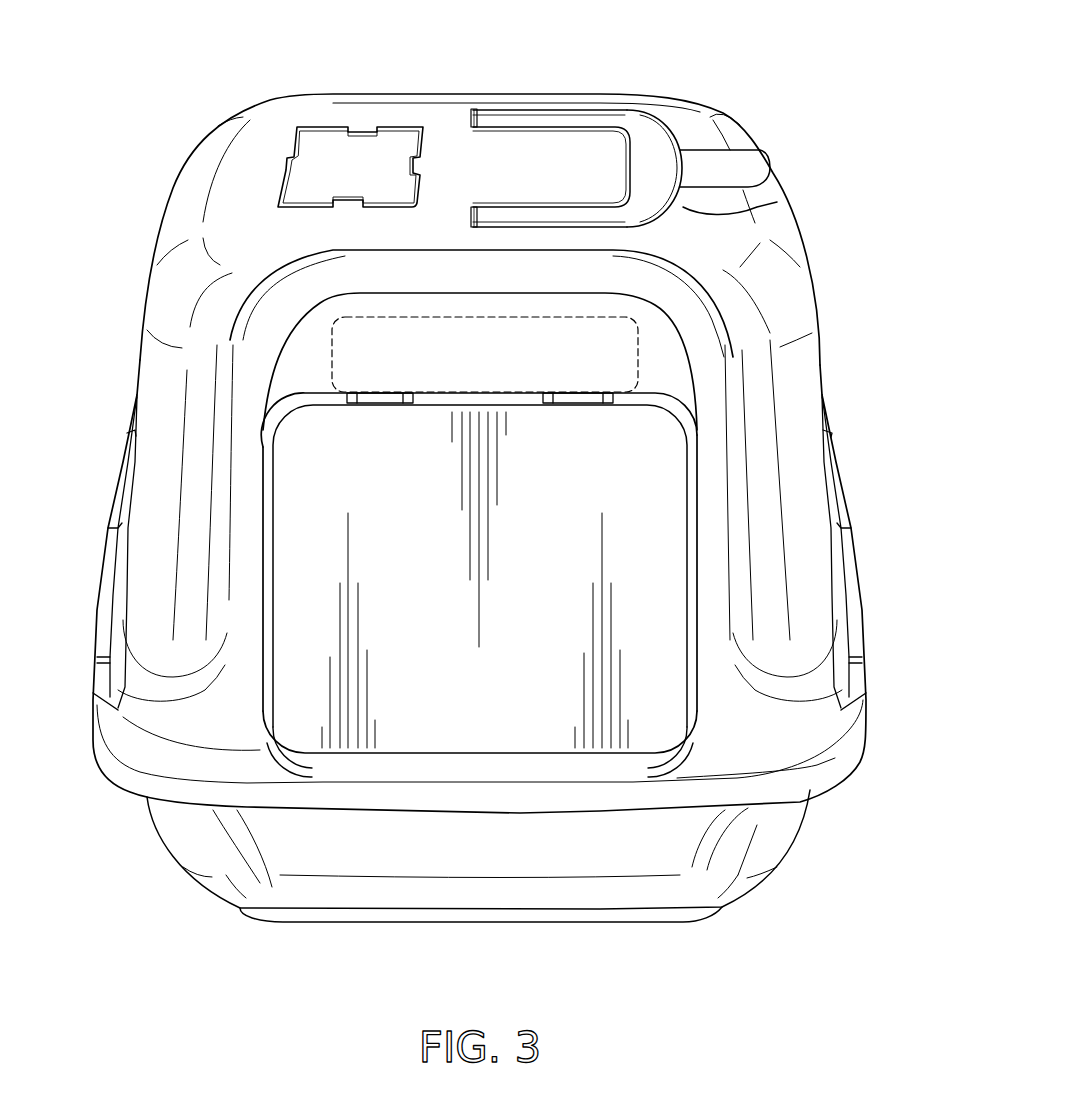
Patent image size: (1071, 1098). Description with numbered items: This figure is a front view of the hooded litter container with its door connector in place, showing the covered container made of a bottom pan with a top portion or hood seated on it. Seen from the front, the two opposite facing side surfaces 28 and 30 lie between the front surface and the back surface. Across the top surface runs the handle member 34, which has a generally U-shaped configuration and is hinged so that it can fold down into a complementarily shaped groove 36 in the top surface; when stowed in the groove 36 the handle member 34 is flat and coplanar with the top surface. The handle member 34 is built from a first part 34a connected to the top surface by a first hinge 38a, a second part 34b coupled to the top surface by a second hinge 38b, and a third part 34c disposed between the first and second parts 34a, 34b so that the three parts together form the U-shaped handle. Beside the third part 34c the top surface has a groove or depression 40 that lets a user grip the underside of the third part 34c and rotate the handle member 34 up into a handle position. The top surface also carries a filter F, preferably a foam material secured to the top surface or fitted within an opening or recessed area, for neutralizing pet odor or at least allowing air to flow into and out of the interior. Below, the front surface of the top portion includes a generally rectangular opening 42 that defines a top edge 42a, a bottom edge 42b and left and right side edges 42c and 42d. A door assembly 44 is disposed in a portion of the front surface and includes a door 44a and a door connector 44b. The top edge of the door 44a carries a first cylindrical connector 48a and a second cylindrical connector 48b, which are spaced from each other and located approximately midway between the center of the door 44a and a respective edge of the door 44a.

The filter F is at (333, 167).
The side surface 28 is at (135, 407).
The side surface 30 is at (823, 369).
The handle member 34 is at (623, 127).
The first part 34a is at (550, 120).
The second part 34b is at (550, 215).
The third part 34c is at (680, 128).
The groove 36 is at (777, 202).
The first hinge 38a is at (475, 112).
The second hinge 38b is at (475, 207).
The groove or depression 40 is at (743, 172).
The opening 42 is at (476, 681).
The top edge 42a is at (277, 398).
The bottom edge 42b is at (480, 762).
The left side edge 42c is at (693, 570).
The right side edge 42d is at (263, 593).
The door assembly 44 is at (590, 499).
The door 44a is at (640, 458).
The door connector 44b is at (612, 353).
The first cylindrical connector 48a is at (577, 400).
The second cylindrical connector 48b is at (377, 401).